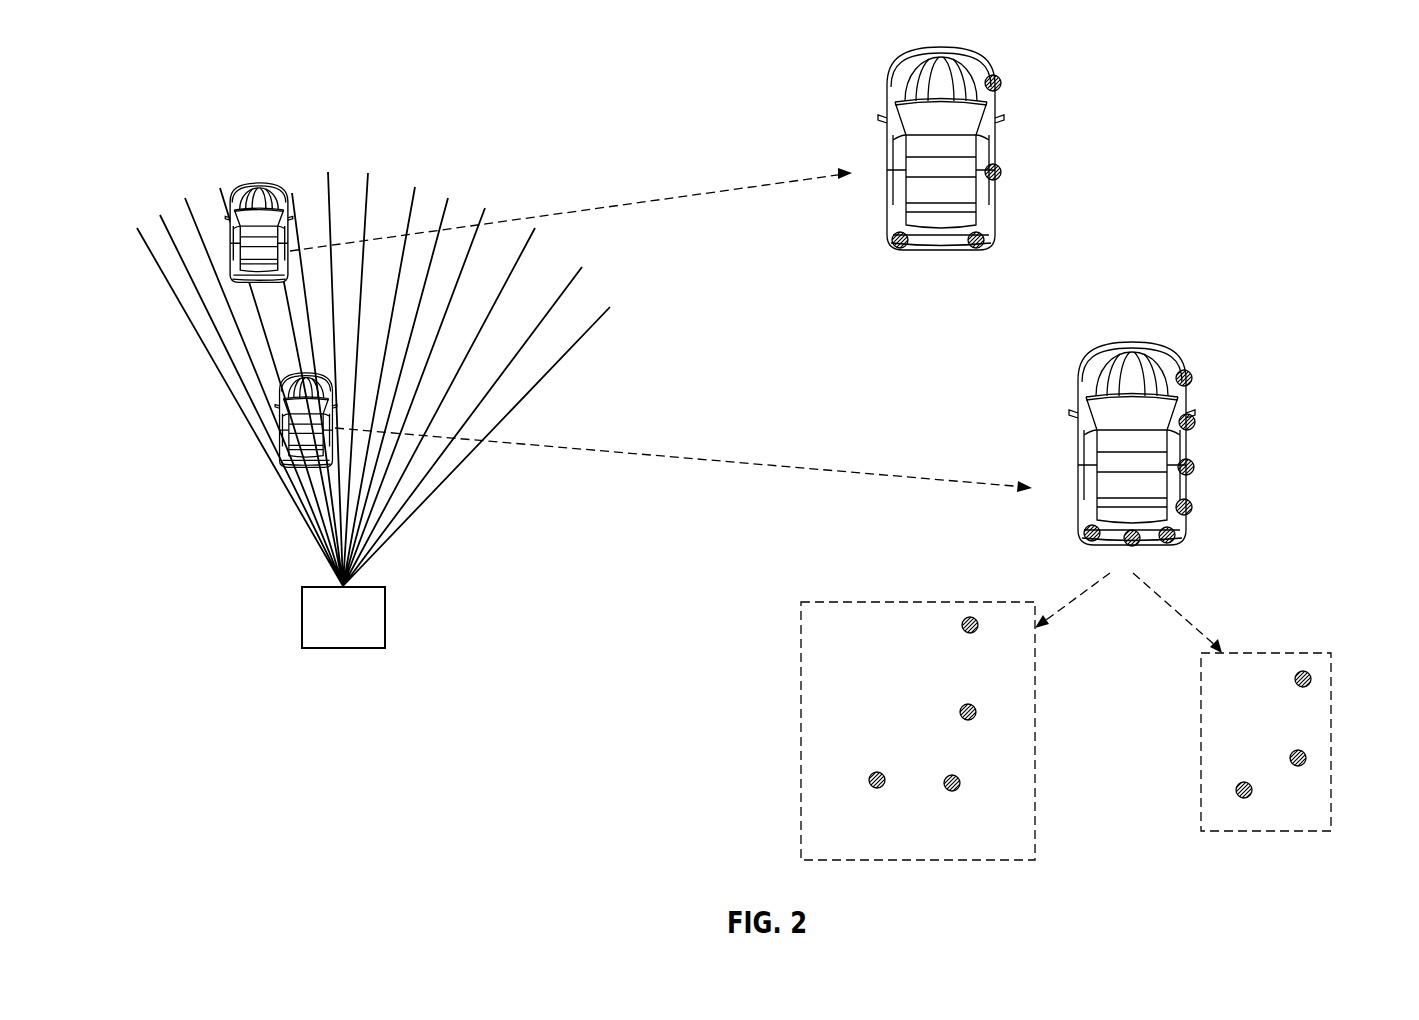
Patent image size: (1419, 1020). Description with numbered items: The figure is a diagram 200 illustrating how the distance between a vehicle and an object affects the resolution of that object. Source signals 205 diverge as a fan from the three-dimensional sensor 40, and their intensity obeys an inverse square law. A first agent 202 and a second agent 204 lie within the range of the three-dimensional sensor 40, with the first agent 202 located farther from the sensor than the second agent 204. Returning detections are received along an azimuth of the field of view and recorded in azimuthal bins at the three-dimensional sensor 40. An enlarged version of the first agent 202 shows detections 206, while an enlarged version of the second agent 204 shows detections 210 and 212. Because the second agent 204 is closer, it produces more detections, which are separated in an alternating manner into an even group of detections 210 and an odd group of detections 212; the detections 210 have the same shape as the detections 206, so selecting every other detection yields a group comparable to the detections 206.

The diagram 200 is at (1265, 140).
The first agent 202 is at (258, 183).
The second agent 204 is at (302, 470).
The source signals 205 is at (203, 343).
The detections 206 is at (1001, 83).
The detections 210 is at (1193, 378).
The detections 212 is at (1196, 422).
The three-dimensional sensor 40 is at (357, 648).